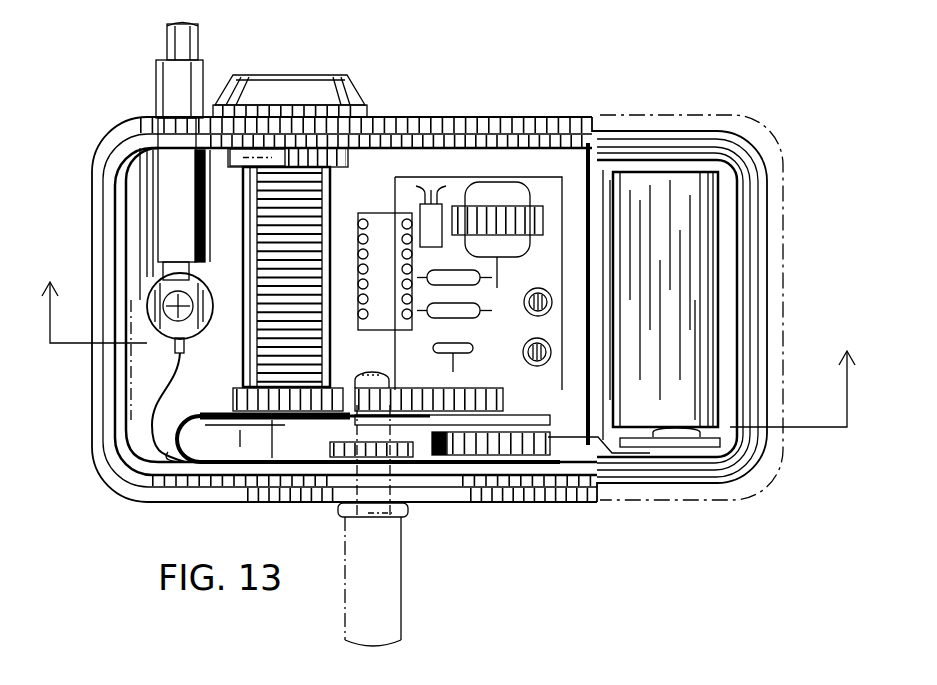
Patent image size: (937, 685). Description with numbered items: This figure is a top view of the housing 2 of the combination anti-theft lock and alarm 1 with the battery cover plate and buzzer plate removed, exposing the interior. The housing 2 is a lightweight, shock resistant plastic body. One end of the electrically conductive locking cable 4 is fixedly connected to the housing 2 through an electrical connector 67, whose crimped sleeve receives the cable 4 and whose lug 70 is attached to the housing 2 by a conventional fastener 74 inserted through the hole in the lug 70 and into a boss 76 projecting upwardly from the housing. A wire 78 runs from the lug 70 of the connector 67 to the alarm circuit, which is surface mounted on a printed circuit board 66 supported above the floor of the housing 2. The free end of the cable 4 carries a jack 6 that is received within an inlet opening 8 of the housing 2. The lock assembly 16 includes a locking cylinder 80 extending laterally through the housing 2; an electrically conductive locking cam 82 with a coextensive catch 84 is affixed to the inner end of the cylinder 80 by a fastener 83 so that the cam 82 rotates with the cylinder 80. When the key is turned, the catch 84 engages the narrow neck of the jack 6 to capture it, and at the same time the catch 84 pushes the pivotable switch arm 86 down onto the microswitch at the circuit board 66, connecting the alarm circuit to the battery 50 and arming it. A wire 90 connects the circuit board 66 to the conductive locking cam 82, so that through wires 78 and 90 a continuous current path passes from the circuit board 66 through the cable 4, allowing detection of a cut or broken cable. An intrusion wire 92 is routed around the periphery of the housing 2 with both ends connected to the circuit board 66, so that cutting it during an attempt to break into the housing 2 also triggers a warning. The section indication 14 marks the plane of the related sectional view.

The combination anti-theft lock and alarm 1 is at (795, 145).
The housing 2 is at (565, 116).
The locking cable 4 is at (180, 33).
The jack 6 is at (377, 598).
The inlet opening 8 is at (375, 497).
The section line 14 is at (450, 338).
The lock assembly 16 is at (378, 100).
The battery 50 is at (708, 257).
The printed circuit board 66 is at (489, 185).
The electrical connector 67 is at (176, 188).
The lug 70 is at (162, 285).
The fastener 74 is at (193, 242).
The boss 76 is at (186, 346).
The wire 78 is at (148, 430).
The locking cylinder 80 is at (285, 243).
The locking cam 82 is at (248, 490).
The fastener 83 is at (275, 490).
The catch 84 is at (345, 388).
The switch arm 86 is at (463, 393).
The wire 90 is at (166, 454).
The intrusion wire 92 is at (147, 437).